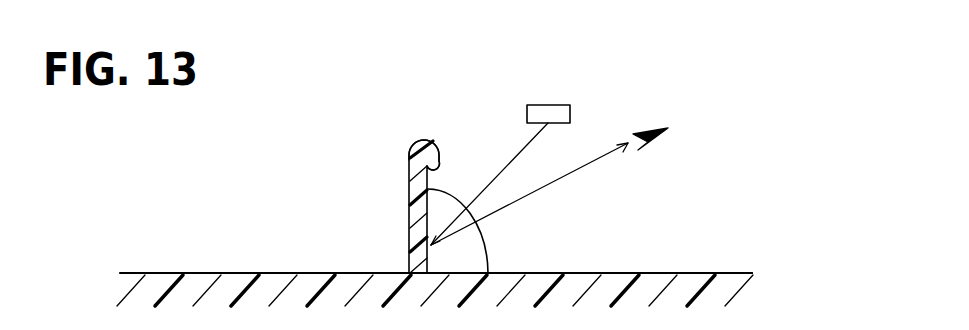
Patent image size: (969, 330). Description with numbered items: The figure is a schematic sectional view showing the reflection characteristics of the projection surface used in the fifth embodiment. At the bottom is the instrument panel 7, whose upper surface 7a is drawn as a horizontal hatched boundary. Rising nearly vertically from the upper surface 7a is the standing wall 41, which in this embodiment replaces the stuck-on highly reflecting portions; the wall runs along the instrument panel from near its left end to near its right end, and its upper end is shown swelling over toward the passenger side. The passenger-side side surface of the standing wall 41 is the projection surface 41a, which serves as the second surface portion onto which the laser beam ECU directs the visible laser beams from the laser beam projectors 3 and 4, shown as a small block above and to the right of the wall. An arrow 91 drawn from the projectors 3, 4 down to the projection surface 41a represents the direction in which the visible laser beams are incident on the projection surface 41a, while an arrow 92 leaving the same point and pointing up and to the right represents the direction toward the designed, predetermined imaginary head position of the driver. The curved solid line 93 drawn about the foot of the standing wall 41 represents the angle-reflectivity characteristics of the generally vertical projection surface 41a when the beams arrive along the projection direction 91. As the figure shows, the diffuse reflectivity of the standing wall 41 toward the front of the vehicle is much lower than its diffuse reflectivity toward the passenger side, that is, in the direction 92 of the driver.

The laser beam projector 3 is at (593, 101).
The laser beam projector 4 is at (571, 114).
The instrument panel 7 is at (157, 283).
The upper surface of the instrument panel 7a is at (695, 276).
The standing wall 41 is at (409, 214).
The projection surface 41a is at (438, 171).
The arrow representing incident direction 91 is at (527, 145).
The arrow representing driver head direction 92 is at (594, 166).
The angle-reflectivity characteristic line 93 is at (450, 197).